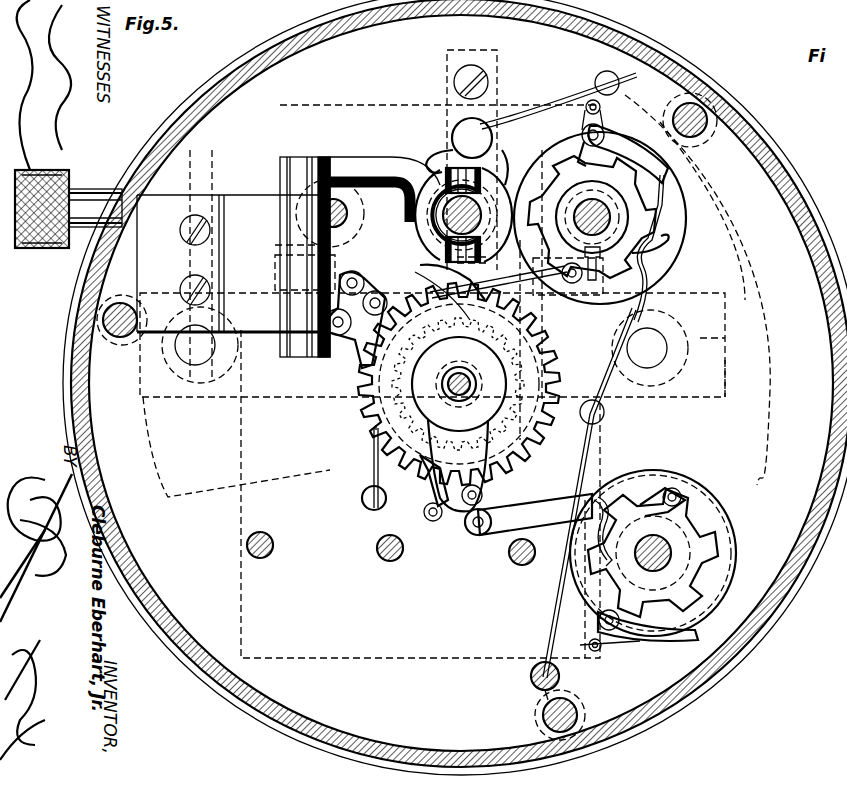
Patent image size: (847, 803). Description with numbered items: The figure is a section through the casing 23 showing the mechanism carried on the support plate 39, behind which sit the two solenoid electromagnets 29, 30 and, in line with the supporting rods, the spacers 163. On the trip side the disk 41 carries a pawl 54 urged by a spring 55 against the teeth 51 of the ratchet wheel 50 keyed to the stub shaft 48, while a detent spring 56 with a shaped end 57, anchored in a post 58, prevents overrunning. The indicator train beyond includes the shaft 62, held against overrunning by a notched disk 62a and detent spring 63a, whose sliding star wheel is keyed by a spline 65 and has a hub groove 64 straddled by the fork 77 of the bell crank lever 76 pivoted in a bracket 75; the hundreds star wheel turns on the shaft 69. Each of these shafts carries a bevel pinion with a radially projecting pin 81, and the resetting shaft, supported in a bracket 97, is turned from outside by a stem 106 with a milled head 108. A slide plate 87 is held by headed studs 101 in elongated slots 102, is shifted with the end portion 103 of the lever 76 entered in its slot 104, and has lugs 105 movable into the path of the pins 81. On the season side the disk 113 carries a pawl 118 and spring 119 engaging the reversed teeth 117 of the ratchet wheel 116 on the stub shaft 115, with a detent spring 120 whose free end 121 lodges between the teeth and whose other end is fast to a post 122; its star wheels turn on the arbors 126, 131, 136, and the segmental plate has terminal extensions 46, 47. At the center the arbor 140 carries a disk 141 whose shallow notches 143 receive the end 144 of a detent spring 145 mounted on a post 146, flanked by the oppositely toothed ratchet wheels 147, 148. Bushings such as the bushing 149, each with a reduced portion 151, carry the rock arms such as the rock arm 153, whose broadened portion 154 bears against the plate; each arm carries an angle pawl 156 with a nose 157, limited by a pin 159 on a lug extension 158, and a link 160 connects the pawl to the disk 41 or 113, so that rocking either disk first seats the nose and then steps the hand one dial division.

The casing 23 is at (110, 585).
The electromagnet 29 is at (318, 105).
The electromagnet 30 is at (253, 660).
The plate 39 is at (461, 383).
The disk 41 is at (684, 238).
The terminal extension 46 is at (147, 417).
The terminal extension 47 is at (770, 305).
The stub shaft 48 is at (612, 217).
The ratchet wheel 50 is at (668, 198).
The teeth 51 is at (586, 112).
The pawl 54 is at (606, 136).
The spring 55 is at (600, 120).
The detent spring 56 is at (658, 248).
The end 57 is at (672, 250).
The post 58 is at (605, 413).
The shaft 62 is at (425, 266).
The notched disk 62a is at (472, 200).
The detent spring 63a is at (545, 100).
The circular groove 64 is at (442, 213).
The spline 65 is at (440, 202).
The shaft 69 is at (345, 222).
The bracket 75 is at (233, 265).
The bell crank lever 76 is at (346, 170).
The fork 77 is at (458, 160).
The pin 81 is at (442, 264).
The slide plate 87 is at (726, 380).
The bracket 97 is at (453, 76).
The headed studs 101 is at (425, 346).
The elongated slots 102 is at (232, 380).
The end portion 103 is at (300, 345).
The slot 104 is at (330, 375).
The lugs 105 is at (596, 289).
The stem 106 is at (95, 197).
The milled head 108 is at (42, 248).
The disk 113 is at (668, 472).
The stub shaft 115 is at (653, 553).
The ratchet wheel 116 is at (696, 536).
The teeth 117 is at (686, 500).
The pawl 118 is at (633, 640).
The spring 119 is at (660, 636).
The detent spring 120 is at (552, 636).
The free end 121 is at (598, 500).
The post 122 is at (532, 680).
The arbor 126 is at (521, 565).
The arbor 131 is at (388, 561).
The arbor 136 is at (265, 557).
The arbor 140 is at (458, 370).
The disk 141 is at (548, 360).
The notches 143 is at (530, 312).
The end 144 is at (366, 362).
The detent spring 145 is at (372, 468).
The post 146 is at (362, 499).
The ratchet wheel 147 is at (372, 450).
The ratchet wheel 148 is at (540, 340).
The bushing 149 is at (472, 386).
The reduced portion 151 is at (446, 388).
The rock arm 153 is at (298, 257).
The broadened portion 154 is at (459, 424).
The pawl 156 is at (412, 272).
The nose 157 is at (430, 484).
The lug extension 158 is at (330, 318).
The pin 159 is at (325, 322).
The link 160 is at (502, 400).
The spacers 163 is at (118, 338).